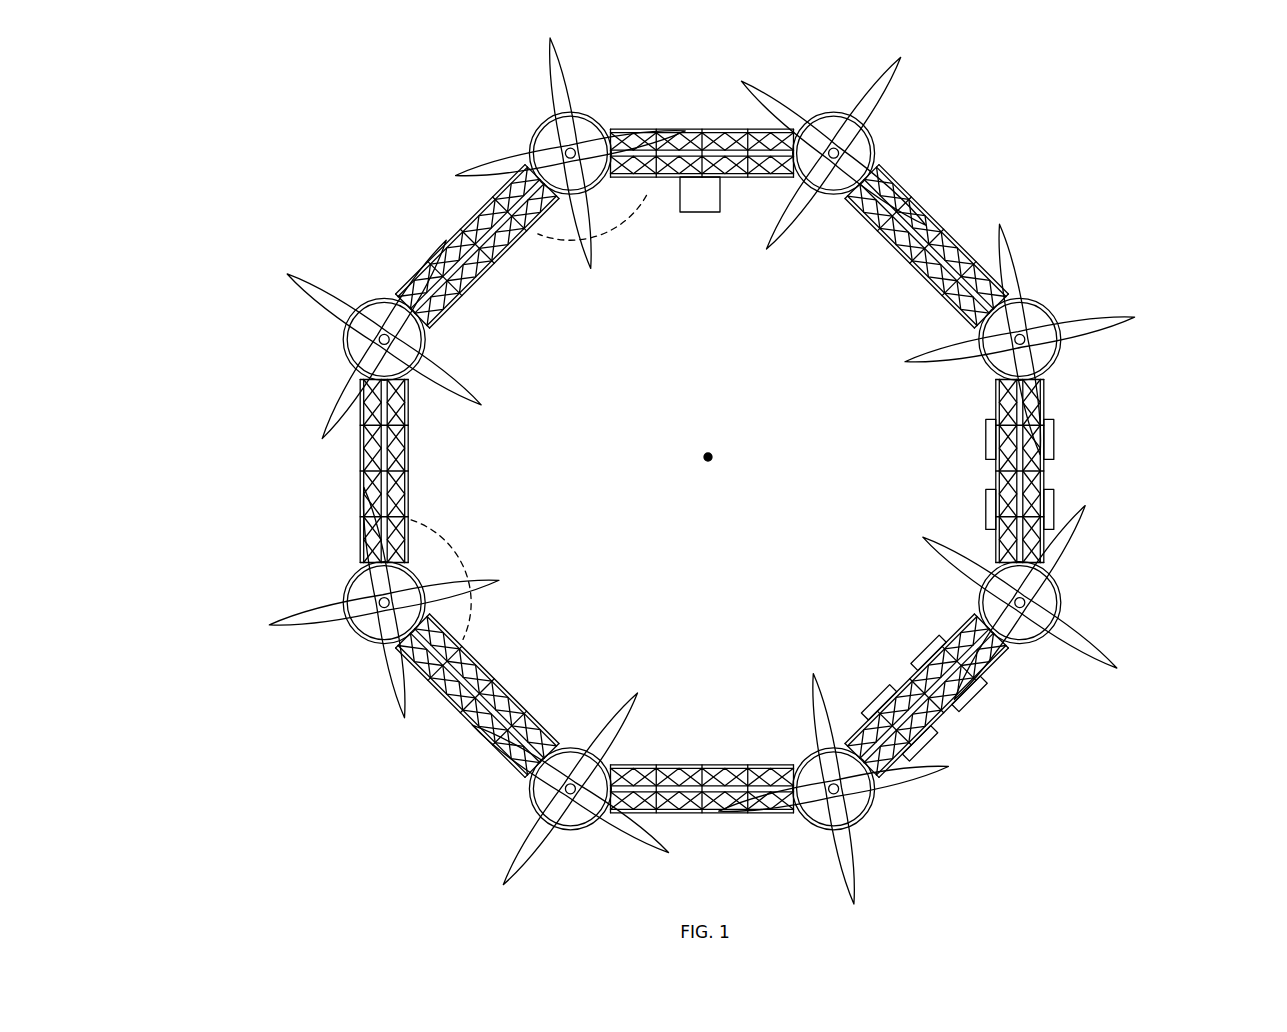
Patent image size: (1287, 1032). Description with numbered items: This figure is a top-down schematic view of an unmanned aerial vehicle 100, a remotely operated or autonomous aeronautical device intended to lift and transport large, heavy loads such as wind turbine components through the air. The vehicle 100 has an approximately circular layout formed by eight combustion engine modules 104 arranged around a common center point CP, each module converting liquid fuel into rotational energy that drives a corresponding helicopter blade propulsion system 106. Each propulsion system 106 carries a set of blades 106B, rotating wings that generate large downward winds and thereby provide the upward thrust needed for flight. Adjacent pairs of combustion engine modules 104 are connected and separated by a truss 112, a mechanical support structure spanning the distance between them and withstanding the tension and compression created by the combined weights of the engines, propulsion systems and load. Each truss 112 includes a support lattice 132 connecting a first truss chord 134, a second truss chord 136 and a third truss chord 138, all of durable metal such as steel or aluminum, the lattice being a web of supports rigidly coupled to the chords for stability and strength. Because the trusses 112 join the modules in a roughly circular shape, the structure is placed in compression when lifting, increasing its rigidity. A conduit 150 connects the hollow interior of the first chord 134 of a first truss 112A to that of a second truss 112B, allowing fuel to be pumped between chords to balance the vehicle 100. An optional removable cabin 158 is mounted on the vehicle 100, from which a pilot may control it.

The unmanned aerial vehicle 100 is at (438, 86).
The combustion engine module 104 is at (702, 492).
The helicopter blade propulsion system 106 is at (525, 147).
The blades 106B is at (548, 74).
The truss 112 is at (702, 455).
The first truss 112A is at (670, 124).
The second truss 112B is at (492, 282).
The support lattice 132 is at (452, 258).
The first truss chord 134 is at (457, 305).
The second truss chord 136 is at (723, 129).
The third truss chord 138 is at (742, 132).
The conduit 150 is at (570, 245).
The cabin 158 is at (702, 202).
The center point CP is at (711, 452).